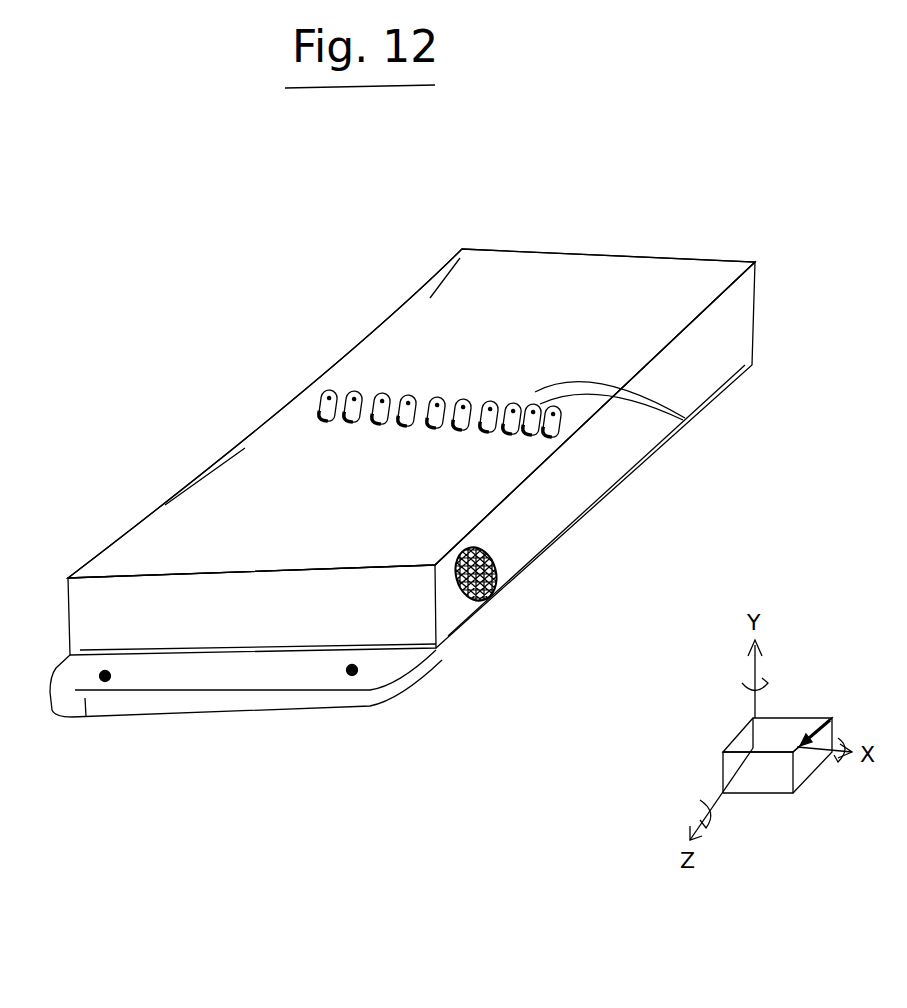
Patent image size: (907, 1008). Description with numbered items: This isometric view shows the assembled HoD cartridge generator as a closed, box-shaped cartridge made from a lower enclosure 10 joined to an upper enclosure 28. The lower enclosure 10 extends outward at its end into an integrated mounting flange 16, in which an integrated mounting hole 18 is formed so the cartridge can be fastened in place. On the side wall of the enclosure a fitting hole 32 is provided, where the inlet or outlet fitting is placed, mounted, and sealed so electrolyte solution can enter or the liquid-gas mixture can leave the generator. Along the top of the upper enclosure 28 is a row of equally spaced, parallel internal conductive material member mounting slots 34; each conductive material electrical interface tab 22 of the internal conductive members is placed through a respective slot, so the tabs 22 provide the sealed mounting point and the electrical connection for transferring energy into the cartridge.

The lower enclosure 10 is at (636, 463).
The integrated mounting flange 16 is at (298, 700).
The integrated mounting hole 18 is at (108, 682).
The conductive material electrical interface tab 22 is at (683, 418).
The upper enclosure 28 is at (672, 277).
The fitting hole 32 is at (489, 592).
The internal conductive material member mounting slot 34 is at (353, 421).